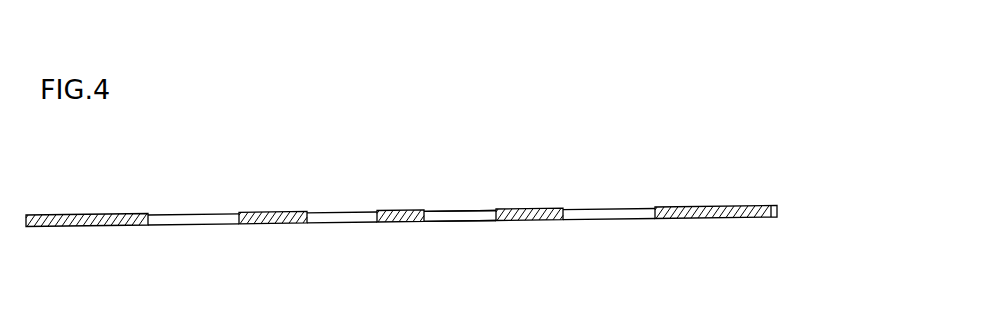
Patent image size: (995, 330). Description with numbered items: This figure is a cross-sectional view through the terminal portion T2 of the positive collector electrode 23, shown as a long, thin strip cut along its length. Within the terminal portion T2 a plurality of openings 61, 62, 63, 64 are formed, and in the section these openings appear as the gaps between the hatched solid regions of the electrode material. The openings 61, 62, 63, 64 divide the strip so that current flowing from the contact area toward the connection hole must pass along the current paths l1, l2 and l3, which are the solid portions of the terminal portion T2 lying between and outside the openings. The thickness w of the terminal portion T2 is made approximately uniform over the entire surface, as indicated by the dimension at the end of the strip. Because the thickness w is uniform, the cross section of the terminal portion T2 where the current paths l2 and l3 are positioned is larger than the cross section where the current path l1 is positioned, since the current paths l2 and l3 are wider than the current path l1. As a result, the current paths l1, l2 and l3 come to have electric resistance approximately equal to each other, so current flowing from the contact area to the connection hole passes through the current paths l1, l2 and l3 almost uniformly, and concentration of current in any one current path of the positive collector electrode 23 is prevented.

The positive collector electrode 23 is at (111, 186).
The opening 61 is at (565, 213).
The opening 62 is at (426, 216).
The opening 63 is at (309, 217).
The opening 64 is at (150, 218).
The terminal portion T2 is at (458, 212).
The thickness of terminal portion w is at (771, 238).
The current path l1 is at (424, 247).
The current path l2 is at (239, 248).
The current path l3 is at (26, 250).